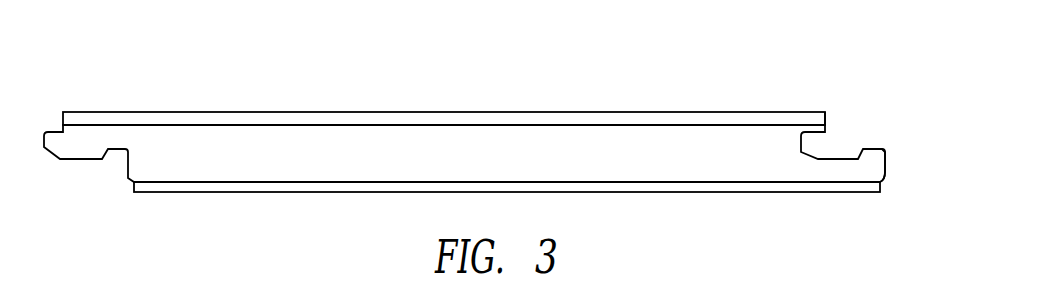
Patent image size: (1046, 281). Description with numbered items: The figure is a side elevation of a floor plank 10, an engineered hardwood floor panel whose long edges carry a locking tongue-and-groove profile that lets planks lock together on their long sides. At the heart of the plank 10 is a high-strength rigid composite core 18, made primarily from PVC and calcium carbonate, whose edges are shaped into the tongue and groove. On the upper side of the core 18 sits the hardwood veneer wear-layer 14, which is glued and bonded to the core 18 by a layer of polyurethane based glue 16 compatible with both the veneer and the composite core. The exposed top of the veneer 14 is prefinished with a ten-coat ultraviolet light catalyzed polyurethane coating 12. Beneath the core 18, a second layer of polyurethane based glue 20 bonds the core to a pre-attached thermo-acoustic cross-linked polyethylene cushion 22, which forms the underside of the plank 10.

The plank 10 is at (505, 112).
The polyurethane coating 12 is at (753, 112).
The hardwood veneer wear-layer 14 is at (831, 111).
The polyurethane based glue layer 16 is at (828, 124).
The composite core 18 is at (890, 158).
The polyurethane based glue 20 is at (883, 182).
The cushion 22 is at (886, 193).